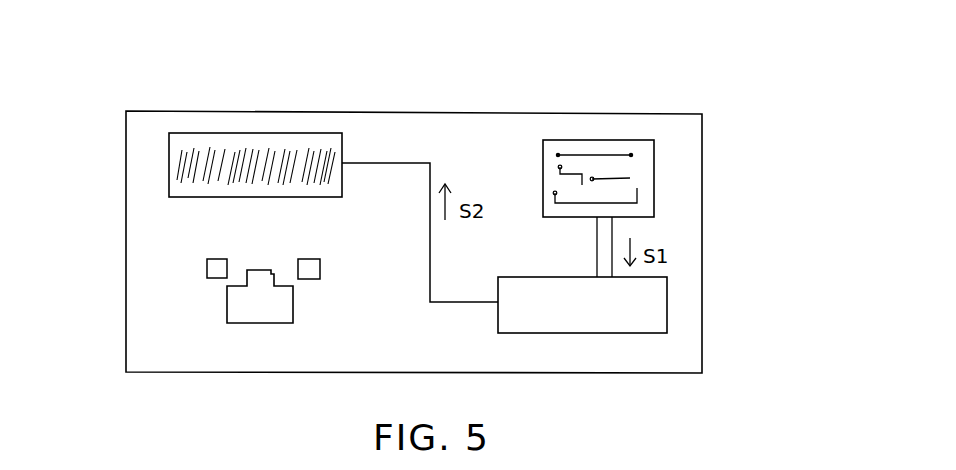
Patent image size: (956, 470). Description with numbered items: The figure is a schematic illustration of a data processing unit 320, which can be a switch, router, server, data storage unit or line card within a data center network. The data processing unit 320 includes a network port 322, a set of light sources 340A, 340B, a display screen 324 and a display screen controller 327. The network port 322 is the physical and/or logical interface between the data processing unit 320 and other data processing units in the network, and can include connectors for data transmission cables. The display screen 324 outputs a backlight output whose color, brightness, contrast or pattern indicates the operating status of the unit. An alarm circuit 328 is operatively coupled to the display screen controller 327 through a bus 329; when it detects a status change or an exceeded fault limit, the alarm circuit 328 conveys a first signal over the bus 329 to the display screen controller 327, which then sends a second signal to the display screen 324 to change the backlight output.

The data processing unit 320 is at (414, 50).
The network port 322 is at (238, 302).
The display screen 324 is at (194, 134).
The display screen controller 327 is at (587, 323).
The alarm circuit 328 is at (606, 163).
The bus 329 is at (607, 232).
The light source 340A is at (207, 265).
The light source 340B is at (300, 267).